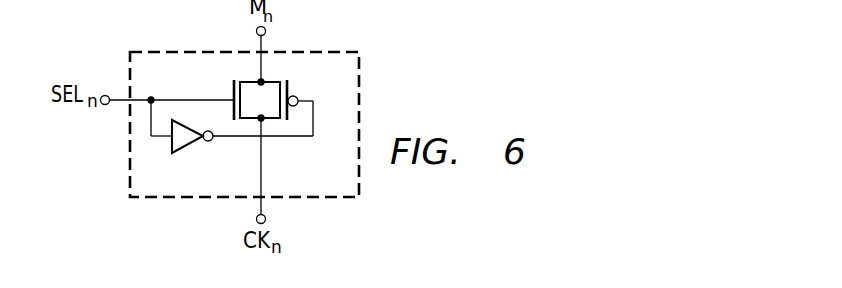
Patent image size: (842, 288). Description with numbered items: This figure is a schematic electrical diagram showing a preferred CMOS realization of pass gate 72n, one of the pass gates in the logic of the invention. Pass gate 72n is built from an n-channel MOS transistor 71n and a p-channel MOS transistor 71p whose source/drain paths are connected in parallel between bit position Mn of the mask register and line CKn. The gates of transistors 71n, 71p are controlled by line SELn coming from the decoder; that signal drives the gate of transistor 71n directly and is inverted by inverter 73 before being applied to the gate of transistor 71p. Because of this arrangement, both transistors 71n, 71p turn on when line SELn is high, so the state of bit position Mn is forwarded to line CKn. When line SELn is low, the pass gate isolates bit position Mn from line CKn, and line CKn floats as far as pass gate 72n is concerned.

The n-channel MOS transistor 71n is at (233, 82).
The p-channel MOS transistor 71p is at (289, 82).
The pass gate 72n is at (362, 93).
The inverter 73 is at (195, 150).